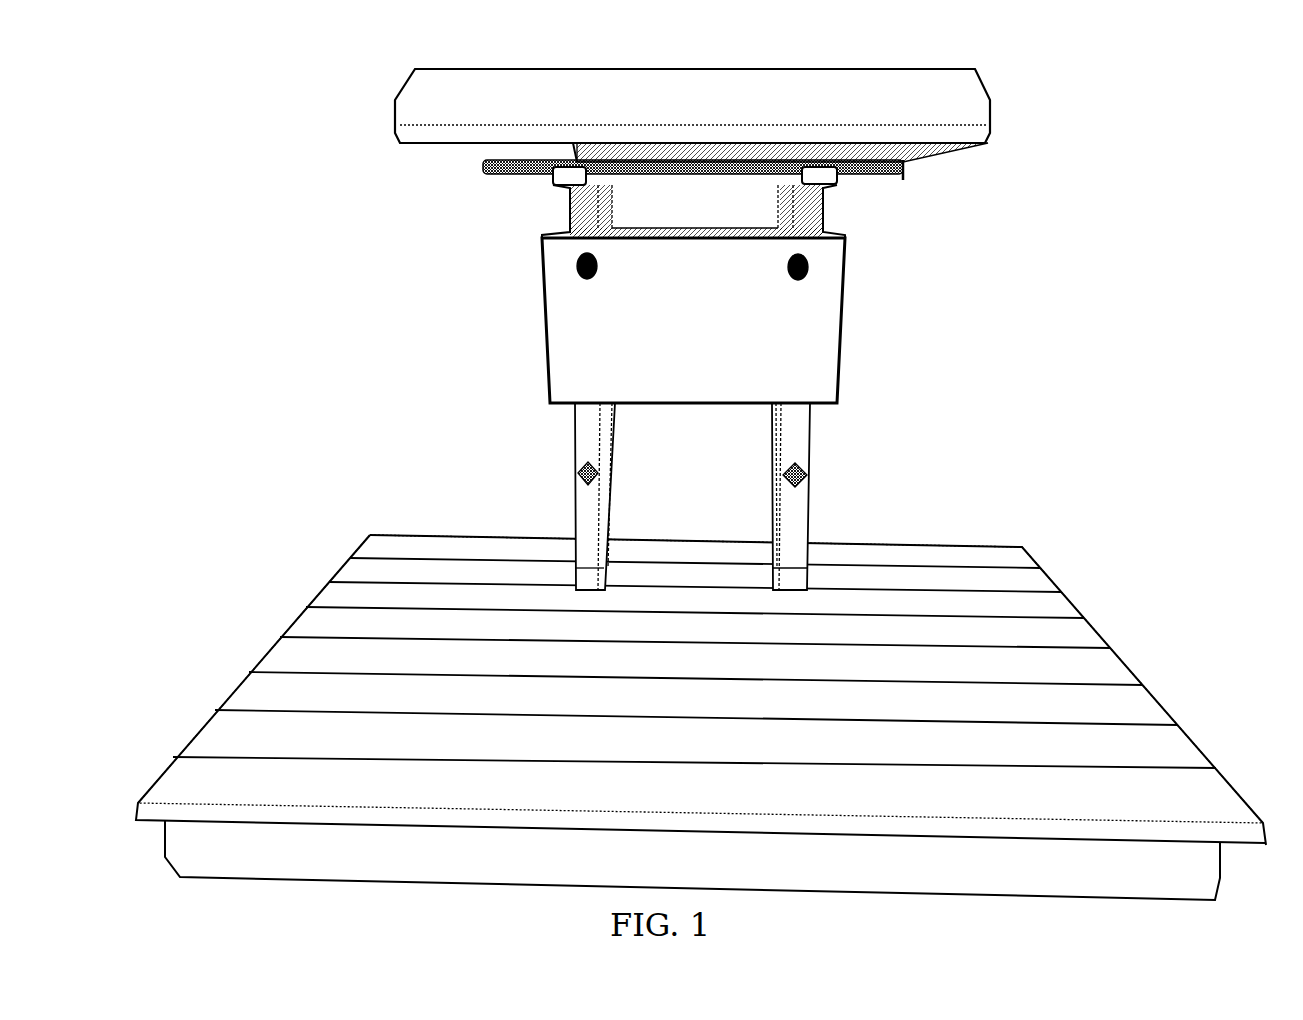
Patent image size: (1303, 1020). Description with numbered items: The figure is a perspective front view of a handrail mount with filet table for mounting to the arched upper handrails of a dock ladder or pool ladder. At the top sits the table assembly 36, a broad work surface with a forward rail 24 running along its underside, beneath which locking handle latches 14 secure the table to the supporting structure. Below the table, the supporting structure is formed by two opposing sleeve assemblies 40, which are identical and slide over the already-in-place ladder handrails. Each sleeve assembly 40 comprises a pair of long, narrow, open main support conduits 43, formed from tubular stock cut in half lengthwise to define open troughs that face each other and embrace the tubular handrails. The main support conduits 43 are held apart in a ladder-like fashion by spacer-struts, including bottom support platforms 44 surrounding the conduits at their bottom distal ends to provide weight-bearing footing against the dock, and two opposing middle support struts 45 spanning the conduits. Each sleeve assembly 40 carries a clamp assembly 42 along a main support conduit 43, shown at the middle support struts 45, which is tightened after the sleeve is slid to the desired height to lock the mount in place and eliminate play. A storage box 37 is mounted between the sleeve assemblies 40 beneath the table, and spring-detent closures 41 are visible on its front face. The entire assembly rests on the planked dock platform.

The top platform board 36 is at (693, 50).
The forward rail 24 is at (503, 178).
The locking handle latches 14 is at (582, 190).
The main support conduits 43 is at (790, 226).
The spring-detent closures 41 is at (790, 264).
The storage box 37 is at (682, 345).
The middle support struts 45 is at (777, 437).
The clamp assembly 42 is at (775, 469).
The sleeve assemblies 40 is at (781, 526).
The bottom support platforms 44 is at (777, 582).